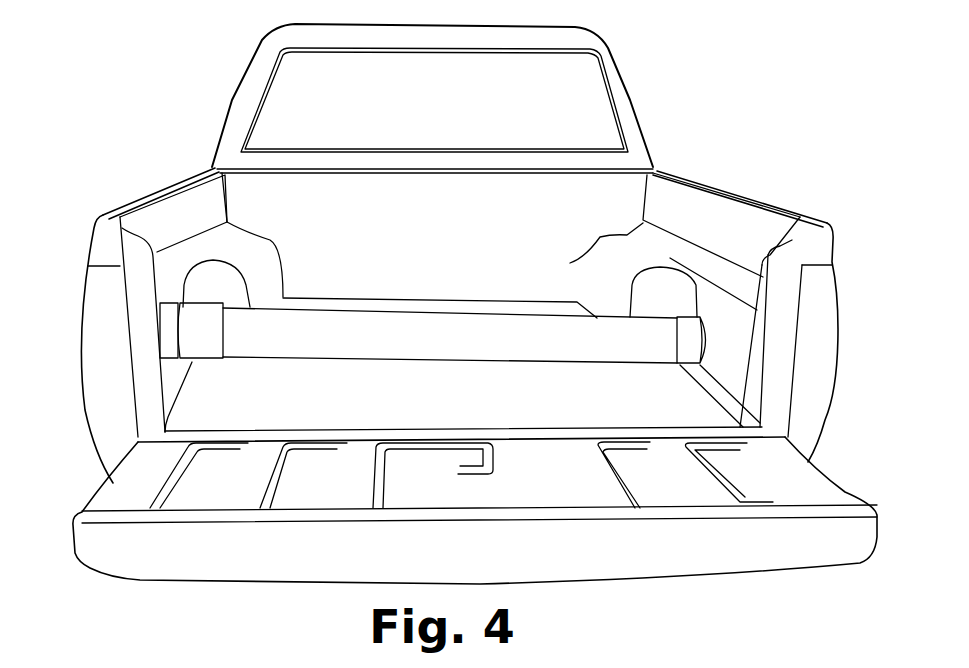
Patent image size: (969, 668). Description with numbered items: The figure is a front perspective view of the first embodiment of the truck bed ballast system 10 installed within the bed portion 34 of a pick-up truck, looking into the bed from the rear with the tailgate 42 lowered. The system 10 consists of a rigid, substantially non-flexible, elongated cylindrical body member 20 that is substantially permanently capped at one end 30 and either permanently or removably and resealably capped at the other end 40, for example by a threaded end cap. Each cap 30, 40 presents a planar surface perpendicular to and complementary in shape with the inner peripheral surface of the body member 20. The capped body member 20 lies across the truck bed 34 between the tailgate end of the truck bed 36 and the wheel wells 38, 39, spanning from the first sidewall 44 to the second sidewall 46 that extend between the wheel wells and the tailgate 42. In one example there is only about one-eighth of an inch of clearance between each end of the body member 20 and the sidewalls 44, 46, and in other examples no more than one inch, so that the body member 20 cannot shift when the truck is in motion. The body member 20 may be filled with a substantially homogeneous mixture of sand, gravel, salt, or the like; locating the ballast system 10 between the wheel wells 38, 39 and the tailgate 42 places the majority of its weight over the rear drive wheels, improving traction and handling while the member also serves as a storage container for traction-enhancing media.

The truck bed ballast system 10 is at (715, 317).
The elongated cylindrical body member 20 is at (420, 352).
The end cap at one end 30 is at (713, 327).
The bed portion of the truck 34 is at (755, 200).
The tailgate end of the truck bed 36 is at (90, 418).
The wheel well 38 is at (670, 267).
The second wheel well 39 is at (190, 283).
The other end cap 40 is at (188, 365).
The tailgate 42 is at (710, 573).
The first sidewall 44 is at (148, 196).
The second sidewall 46 is at (827, 340).